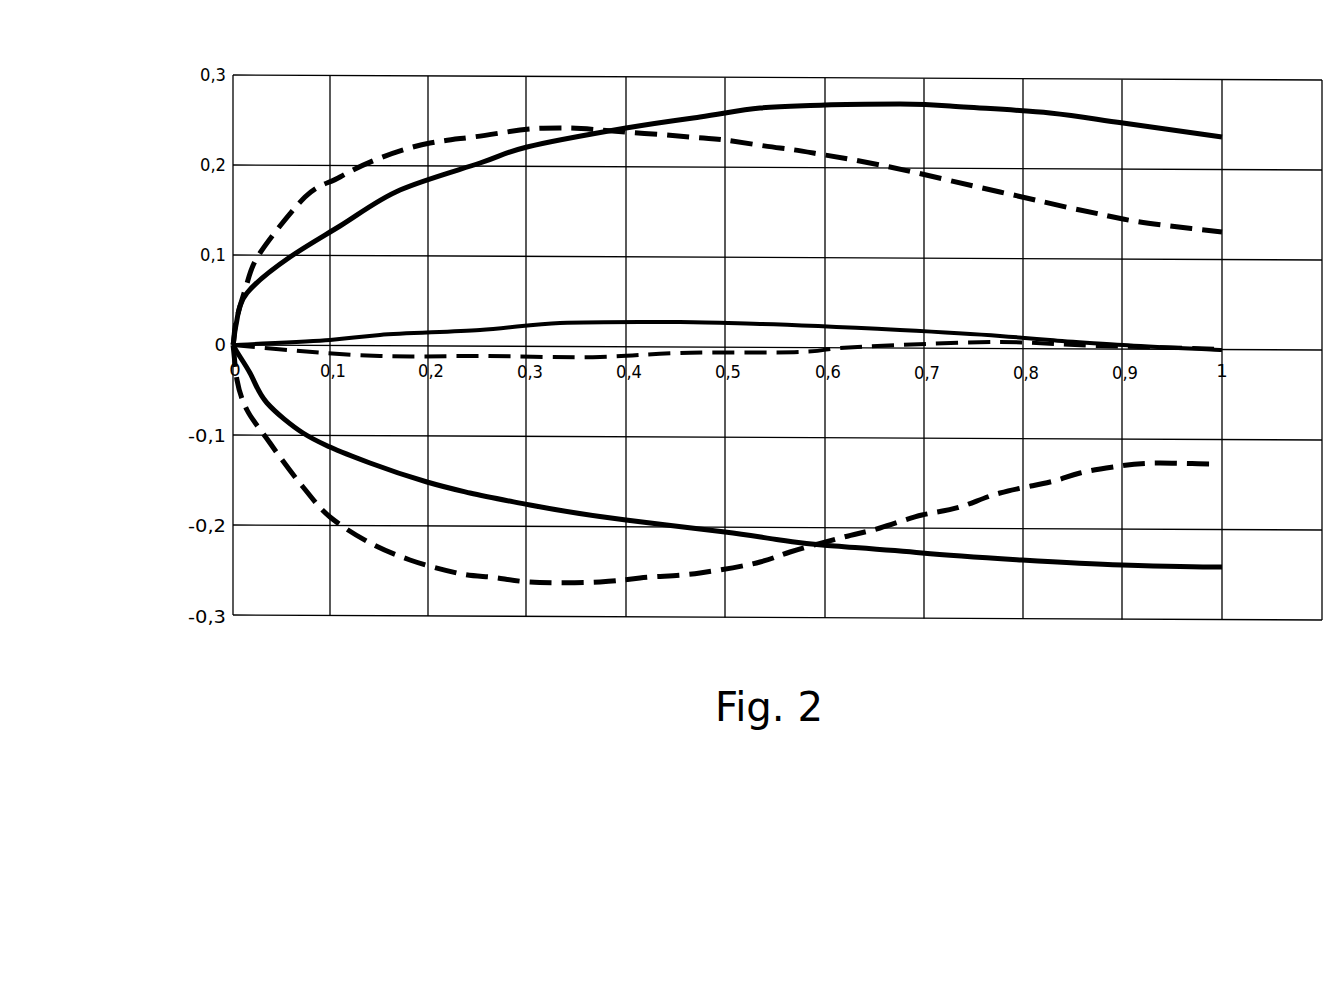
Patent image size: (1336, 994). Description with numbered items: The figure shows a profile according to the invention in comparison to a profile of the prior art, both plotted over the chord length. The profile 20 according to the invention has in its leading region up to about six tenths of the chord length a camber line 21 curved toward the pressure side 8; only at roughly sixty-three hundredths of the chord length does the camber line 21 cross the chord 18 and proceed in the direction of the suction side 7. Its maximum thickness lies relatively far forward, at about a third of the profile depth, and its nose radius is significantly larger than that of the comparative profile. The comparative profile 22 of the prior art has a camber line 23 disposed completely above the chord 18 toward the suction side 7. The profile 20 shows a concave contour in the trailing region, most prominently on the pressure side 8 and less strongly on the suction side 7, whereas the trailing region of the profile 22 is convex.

The suction side 7 is at (727, 285).
The pressure side 8 is at (727, 368).
The chord 18 is at (477, 345).
The profile according to the invention 20 is at (475, 136).
The camber line 21 is at (603, 357).
The comparative profile 22 is at (853, 102).
The camber line 23 is at (757, 325).